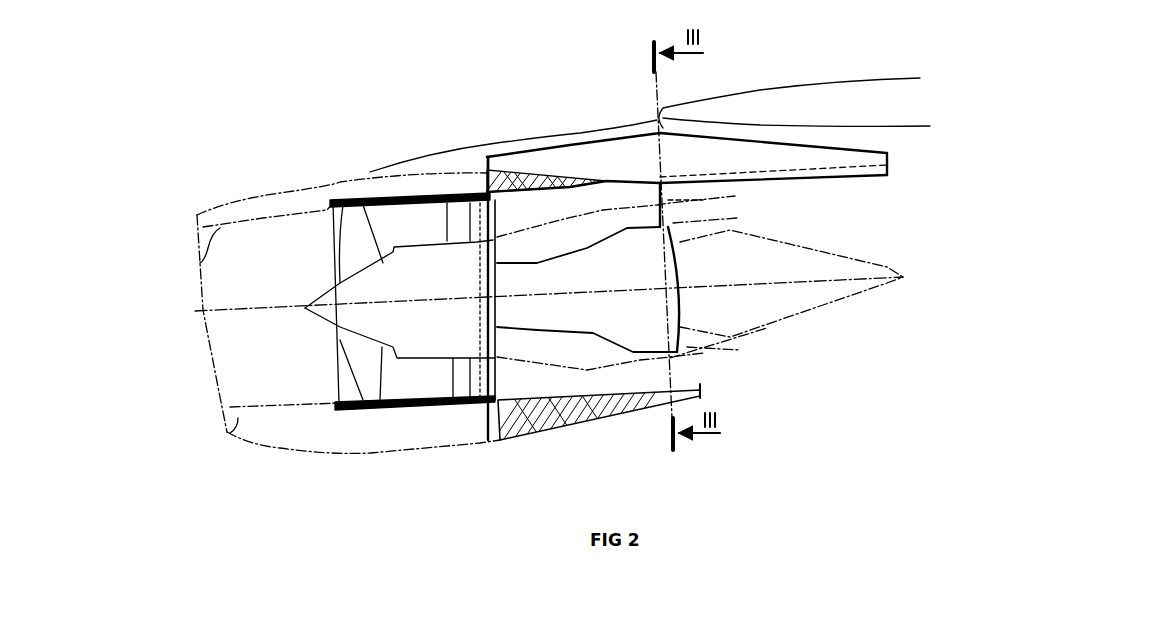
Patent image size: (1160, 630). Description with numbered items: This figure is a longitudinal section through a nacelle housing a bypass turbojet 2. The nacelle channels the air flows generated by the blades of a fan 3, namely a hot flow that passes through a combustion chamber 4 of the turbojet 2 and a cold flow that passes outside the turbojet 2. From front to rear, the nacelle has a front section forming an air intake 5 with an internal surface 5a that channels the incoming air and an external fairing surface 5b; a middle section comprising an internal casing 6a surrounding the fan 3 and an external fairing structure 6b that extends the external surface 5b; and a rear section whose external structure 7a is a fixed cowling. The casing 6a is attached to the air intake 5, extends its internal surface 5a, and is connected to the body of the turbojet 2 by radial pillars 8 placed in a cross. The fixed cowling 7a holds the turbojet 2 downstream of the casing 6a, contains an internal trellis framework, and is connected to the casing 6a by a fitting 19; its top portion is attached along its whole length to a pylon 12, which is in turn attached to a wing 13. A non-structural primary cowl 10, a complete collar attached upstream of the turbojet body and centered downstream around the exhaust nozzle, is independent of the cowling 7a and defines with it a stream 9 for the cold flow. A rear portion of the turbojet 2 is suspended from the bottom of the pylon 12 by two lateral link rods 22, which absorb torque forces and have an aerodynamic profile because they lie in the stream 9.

The bypass turbojet 2 is at (667, 335).
The fan 3 is at (378, 318).
The combustion chamber 4 is at (577, 300).
The air intake 5 is at (237, 206).
The internal surface 5a is at (200, 263).
The external fairing surface 5b is at (230, 433).
The internal casing 6a is at (371, 200).
The external fairing structure 6b is at (332, 453).
The external structure 7a is at (554, 436).
The radial pillars 8 is at (455, 216).
The stream 9 is at (521, 382).
The primary cowl 10 is at (547, 220).
The pylon 12 is at (572, 141).
The wing 13 is at (802, 88).
The fitting 19 is at (490, 410).
The lateral link rods 22 is at (667, 200).